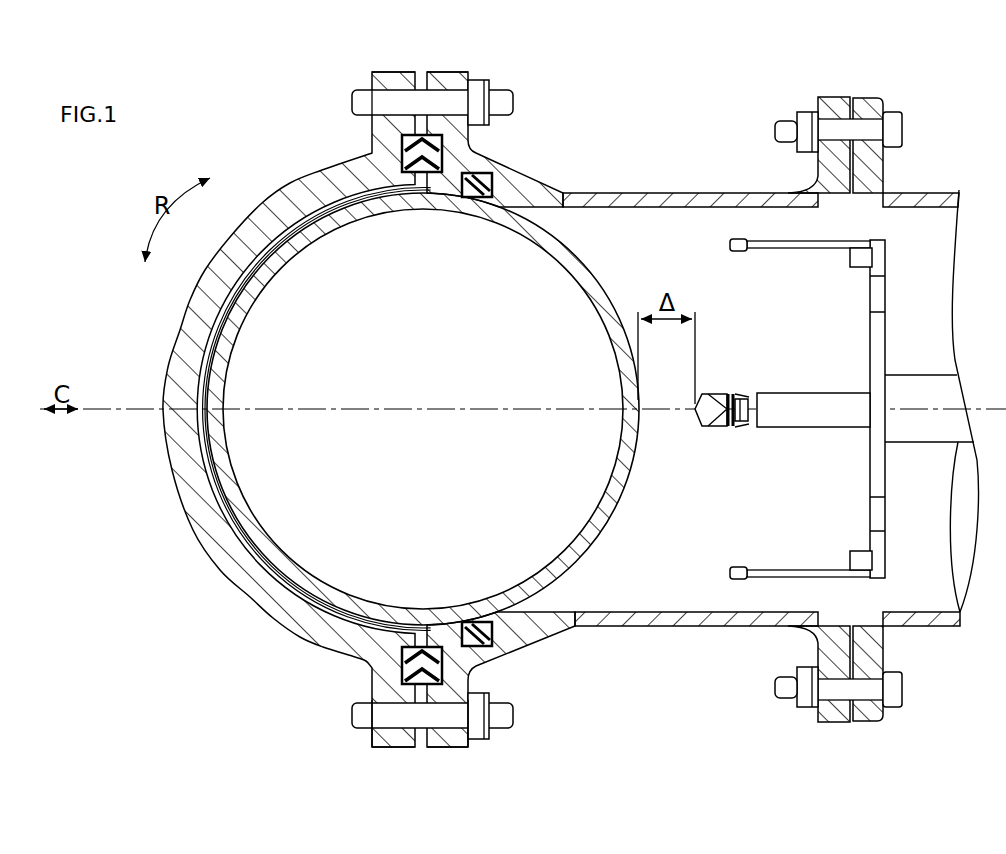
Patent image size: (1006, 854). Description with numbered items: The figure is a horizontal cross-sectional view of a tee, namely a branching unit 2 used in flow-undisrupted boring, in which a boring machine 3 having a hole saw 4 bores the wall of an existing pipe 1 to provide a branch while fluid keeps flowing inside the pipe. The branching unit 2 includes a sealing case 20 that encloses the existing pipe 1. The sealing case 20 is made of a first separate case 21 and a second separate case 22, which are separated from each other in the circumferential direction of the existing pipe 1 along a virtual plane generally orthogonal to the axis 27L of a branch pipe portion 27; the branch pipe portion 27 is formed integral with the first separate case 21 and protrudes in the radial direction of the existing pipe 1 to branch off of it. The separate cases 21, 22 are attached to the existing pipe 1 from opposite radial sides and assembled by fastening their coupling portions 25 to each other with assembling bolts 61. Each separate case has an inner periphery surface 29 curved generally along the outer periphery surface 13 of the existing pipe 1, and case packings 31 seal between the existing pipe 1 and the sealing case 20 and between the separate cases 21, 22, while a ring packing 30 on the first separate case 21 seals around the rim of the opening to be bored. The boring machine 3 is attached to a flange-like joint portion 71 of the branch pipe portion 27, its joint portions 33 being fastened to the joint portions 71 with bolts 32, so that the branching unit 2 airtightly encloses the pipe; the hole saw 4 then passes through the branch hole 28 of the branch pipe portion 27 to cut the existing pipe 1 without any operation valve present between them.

The existing pipe 1 is at (521, 227).
The branching unit 2 is at (691, 147).
The boring machine 3 is at (943, 193).
The hole saw 4 is at (785, 248).
The outer periphery surface 13 is at (198, 365).
The sealing case 20 is at (552, 803).
The first separate case 21 is at (532, 640).
The second separate case 22 is at (327, 648).
The coupling portions 25 is at (437, 72).
The branch pipe portion 27 is at (703, 627).
The axis of the branch pipe portion 27L is at (782, 415).
The branch hole 28 is at (710, 208).
The inner periphery surface 29 is at (207, 360).
The ring packing 30 is at (490, 175).
The case packing 31 is at (402, 156).
The bolts 32 is at (903, 125).
The joint portions of the boring machine 33 is at (864, 98).
The assembling bolts 61 is at (357, 90).
The joint portion 71 is at (824, 97).